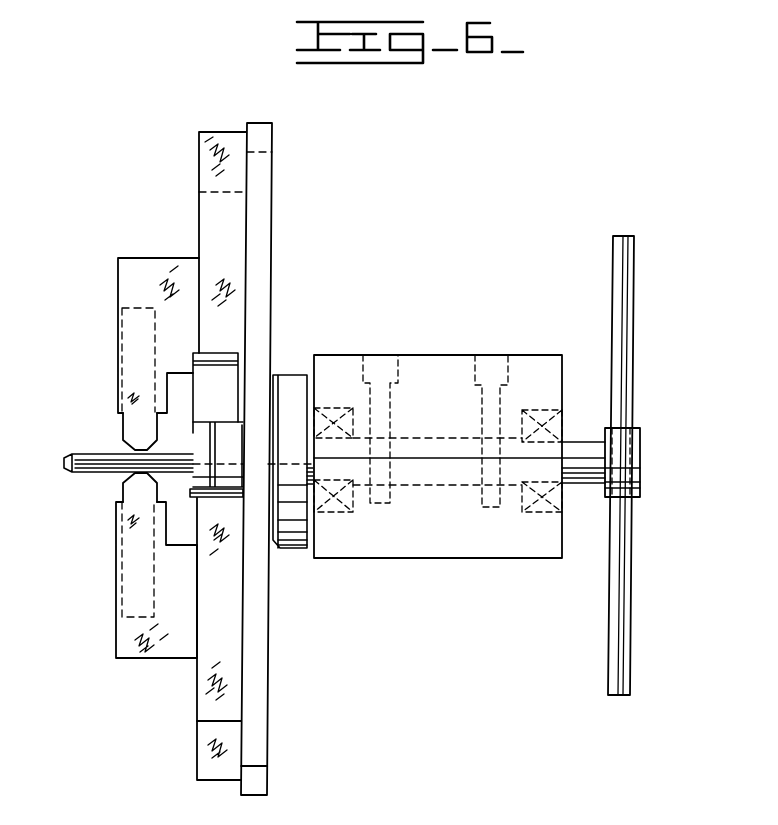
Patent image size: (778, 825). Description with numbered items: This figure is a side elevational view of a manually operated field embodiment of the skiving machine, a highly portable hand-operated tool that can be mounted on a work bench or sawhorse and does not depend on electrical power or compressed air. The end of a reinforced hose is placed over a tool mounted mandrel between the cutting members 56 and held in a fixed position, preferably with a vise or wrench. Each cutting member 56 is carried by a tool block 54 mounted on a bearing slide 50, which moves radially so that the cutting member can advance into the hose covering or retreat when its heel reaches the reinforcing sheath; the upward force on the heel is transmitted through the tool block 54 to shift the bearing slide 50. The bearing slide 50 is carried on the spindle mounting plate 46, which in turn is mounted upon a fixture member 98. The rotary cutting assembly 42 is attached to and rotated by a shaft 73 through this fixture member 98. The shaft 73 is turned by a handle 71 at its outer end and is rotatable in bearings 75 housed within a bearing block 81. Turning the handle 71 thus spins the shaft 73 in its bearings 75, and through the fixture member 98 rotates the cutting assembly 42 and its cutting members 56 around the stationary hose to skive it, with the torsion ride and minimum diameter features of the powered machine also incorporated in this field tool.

The rotary cutting assembly 42 is at (274, 194).
The spindle mounting plate 46 is at (262, 723).
The bearing slide 50 is at (199, 152).
The tool block 54 is at (146, 264).
The cutting member 56 is at (130, 429).
The handle 71 is at (613, 297).
The shaft 73 is at (570, 446).
The bearings 75 is at (327, 512).
The bearing block 81 is at (423, 362).
The fixture member 98 is at (290, 373).